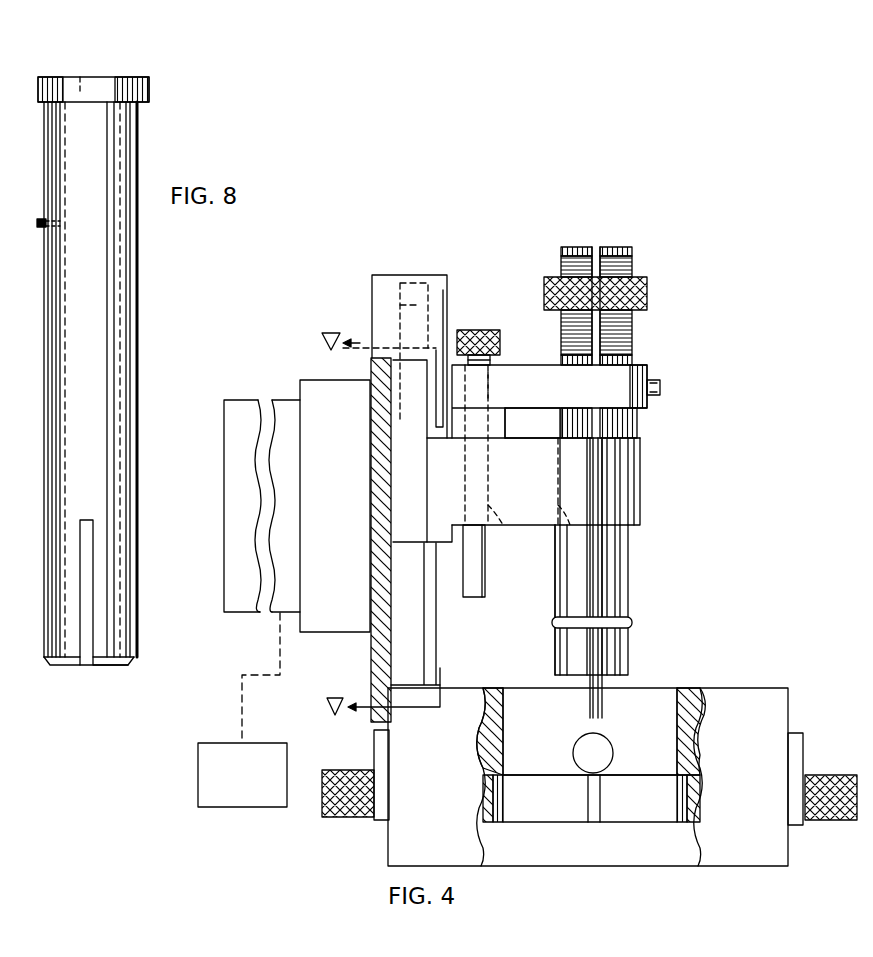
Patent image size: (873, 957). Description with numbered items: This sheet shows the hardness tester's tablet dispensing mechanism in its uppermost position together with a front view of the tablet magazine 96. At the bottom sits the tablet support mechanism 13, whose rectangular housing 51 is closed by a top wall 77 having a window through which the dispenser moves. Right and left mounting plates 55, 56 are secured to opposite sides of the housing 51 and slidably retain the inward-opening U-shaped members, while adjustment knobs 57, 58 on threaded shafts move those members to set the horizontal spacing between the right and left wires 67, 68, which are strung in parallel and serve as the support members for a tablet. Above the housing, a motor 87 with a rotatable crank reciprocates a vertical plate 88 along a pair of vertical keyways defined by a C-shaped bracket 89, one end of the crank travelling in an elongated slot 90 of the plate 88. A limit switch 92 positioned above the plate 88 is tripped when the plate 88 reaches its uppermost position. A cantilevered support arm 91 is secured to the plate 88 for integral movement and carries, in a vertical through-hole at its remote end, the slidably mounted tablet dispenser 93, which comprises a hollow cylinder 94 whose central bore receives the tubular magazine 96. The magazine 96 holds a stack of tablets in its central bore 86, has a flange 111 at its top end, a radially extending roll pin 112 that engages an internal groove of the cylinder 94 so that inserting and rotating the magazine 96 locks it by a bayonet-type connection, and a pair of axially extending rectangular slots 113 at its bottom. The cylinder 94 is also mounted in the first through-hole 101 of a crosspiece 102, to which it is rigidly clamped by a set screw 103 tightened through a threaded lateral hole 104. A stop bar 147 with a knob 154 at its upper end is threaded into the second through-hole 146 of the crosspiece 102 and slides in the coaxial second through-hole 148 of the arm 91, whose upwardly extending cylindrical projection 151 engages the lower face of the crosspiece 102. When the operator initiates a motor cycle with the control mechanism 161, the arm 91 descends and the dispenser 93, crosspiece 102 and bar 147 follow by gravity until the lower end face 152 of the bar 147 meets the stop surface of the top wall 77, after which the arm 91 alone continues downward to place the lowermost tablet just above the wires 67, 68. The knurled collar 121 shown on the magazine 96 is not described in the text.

In FIG. 4, the tablet support mechanism 13 is at (747, 690).
In FIG. 4, the rectangular housing 51 is at (735, 853).
In FIG. 4, the right mounting plate 55 is at (797, 748).
In FIG. 4, the left mounting plate 56 is at (380, 748).
In FIG. 4, the adjustment knob 57 is at (833, 775).
In FIG. 4, the adjustment knob 58 is at (332, 802).
In FIG. 4, the right wire 67 is at (598, 776).
In FIG. 4, the left wire 68 is at (583, 777).
In FIG. 4, the top wall 77 is at (697, 688).
In FIG. 8, the central bore 86 is at (66, 122).
In FIG. 4, the central bore 86 is at (306, 383).
In FIG. 4, the motor 87 is at (246, 400).
In FIG. 4, the vertical plate 88 is at (395, 363).
In FIG. 4, the C-shaped bracket 89 is at (370, 640).
In FIG. 4, the elongated slot 90 is at (567, 533).
In FIG. 4, the cantilevered support arm 91 is at (605, 487).
In FIG. 4, the limit switch 92 is at (374, 293).
In FIG. 4, the tablet dispenser 93 is at (630, 600).
In FIG. 4, the hollow cylinder 94 is at (620, 565).
In FIG. 8, the tubular magazine 96 is at (137, 155).
In FIG. 4, the tubular magazine 96 is at (630, 250).
In FIG. 4, the first through-hole 101 is at (562, 422).
In FIG. 4, the crosspiece 102 is at (537, 365).
In FIG. 4, the set screw 103 is at (654, 381).
In FIG. 4, the threaded lateral hole 104 is at (650, 408).
In FIG. 8, the flange 111 is at (145, 78).
In FIG. 8, the roll pin 112 is at (40, 229).
In FIG. 8, the rectangular slot 113 is at (93, 660).
In FIG. 4, the knurled nut 121 is at (650, 292).
In FIG. 4, the second threaded through-hole 146 is at (490, 381).
In FIG. 4, the stop bar 147 is at (488, 362).
In FIG. 4, the second through-hole 148 is at (529, 533).
In FIG. 4, the cylindrical projection 151 is at (503, 418).
In FIG. 4, the lower end face 152 is at (472, 597).
In FIG. 4, the knob 154 is at (470, 330).
In FIG. 4, the control mechanism 161 is at (252, 792).